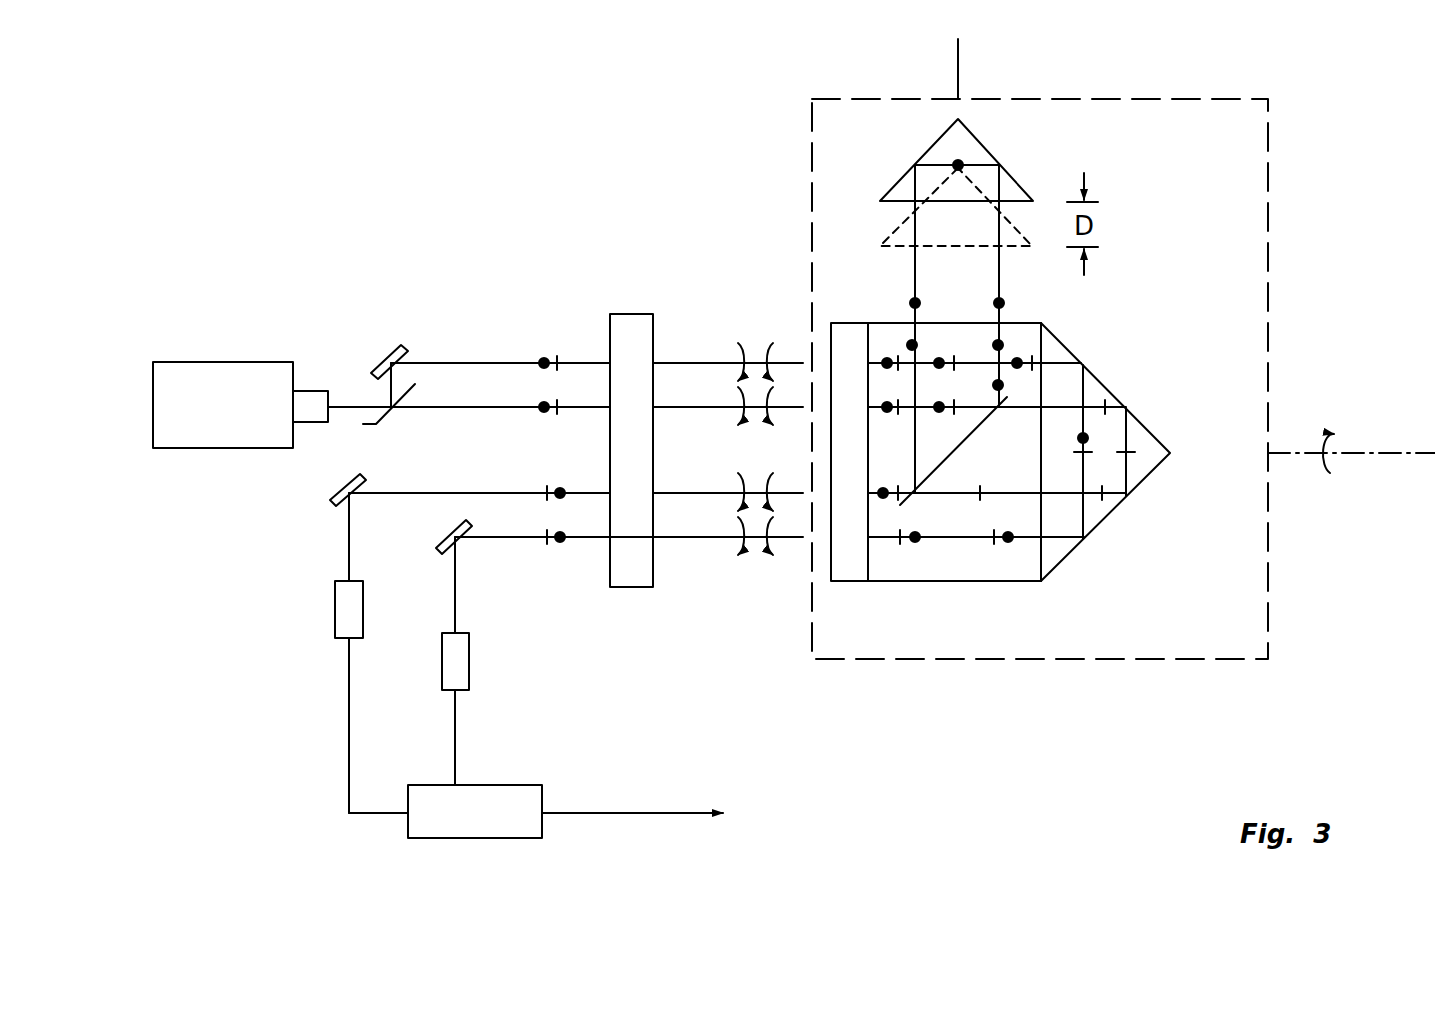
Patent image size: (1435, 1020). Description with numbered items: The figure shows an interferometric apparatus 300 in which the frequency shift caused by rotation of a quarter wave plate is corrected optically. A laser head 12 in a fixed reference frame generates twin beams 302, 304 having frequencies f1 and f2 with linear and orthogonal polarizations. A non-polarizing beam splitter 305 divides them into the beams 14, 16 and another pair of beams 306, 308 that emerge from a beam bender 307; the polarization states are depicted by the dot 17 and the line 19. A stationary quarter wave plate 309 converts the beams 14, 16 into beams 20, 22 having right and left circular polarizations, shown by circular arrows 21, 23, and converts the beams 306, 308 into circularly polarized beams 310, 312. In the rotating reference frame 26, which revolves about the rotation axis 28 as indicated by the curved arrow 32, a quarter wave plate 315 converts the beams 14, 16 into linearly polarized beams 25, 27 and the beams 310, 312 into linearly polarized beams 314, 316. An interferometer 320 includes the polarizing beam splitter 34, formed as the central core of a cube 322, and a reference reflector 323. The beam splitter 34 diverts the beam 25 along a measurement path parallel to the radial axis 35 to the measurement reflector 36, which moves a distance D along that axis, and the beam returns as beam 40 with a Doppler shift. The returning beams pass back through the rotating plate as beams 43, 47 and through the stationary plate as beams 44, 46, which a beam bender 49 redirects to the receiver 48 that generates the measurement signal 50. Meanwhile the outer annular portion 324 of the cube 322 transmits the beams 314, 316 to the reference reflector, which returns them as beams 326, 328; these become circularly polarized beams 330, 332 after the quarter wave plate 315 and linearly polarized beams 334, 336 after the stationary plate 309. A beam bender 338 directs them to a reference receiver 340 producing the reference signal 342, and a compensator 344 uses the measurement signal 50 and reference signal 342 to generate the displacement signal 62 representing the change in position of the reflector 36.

The interferometric apparatus 300 is at (338, 142).
The laser head 12 is at (178, 360).
The beam 302 is at (346, 401).
The beam 304 is at (356, 401).
The non-polarizing beam splitter 305 is at (358, 424).
The beam bender 307 is at (373, 376).
The beam 306 is at (438, 360).
The beam 308 is at (492, 360).
The beam 14 is at (444, 412).
The beam 16 is at (467, 412).
The dot 17 is at (546, 358).
The line 19 is at (560, 360).
The returning beam 44 is at (404, 488).
The returning beam 46 is at (420, 499).
The beam bender 49 is at (325, 508).
The beam bender 338 is at (430, 546).
The receiver 48 is at (333, 600).
The measurement signal 50 is at (344, 695).
The beam 334 is at (457, 585).
The beam 336 is at (457, 610).
The reference receiver 340 is at (471, 668).
The reference signal 342 is at (460, 727).
The compensator 344 is at (530, 783).
The displacement signal 62 is at (660, 811).
The stationary quarter wave plate 309 is at (632, 313).
The beam 310 is at (675, 359).
The beam 312 is at (693, 359).
The beam 20 is at (694, 403).
The beam 22 is at (702, 411).
The beam 43 is at (696, 488).
The beam 330 is at (694, 541).
The beam 332 is at (782, 545).
The circular arrow 21 is at (742, 340).
The circular arrow 23 is at (769, 340).
The beam 47 is at (780, 490).
The rotating reference frame 26 is at (865, 98).
The radial axis 35 is at (962, 70).
The measurement reflector 36 is at (988, 146).
The beam 40 is at (920, 272).
The interferometer 320 is at (1106, 348).
The quarter wave plate 315 is at (852, 322).
The cube 322 is at (914, 583).
The beam 314 is at (877, 357).
The beam 316 is at (890, 356).
The beam 25 is at (877, 415).
The beam 27 is at (905, 415).
The polarizing beam splitter 34 is at (1018, 446).
The reference reflector 323 is at (1101, 523).
The outer annular portion 324 is at (901, 550).
The beam 326 is at (961, 545).
The beam 328 is at (973, 545).
The rotation axis 28 is at (1372, 455).
The curved arrow 32 is at (1320, 432).